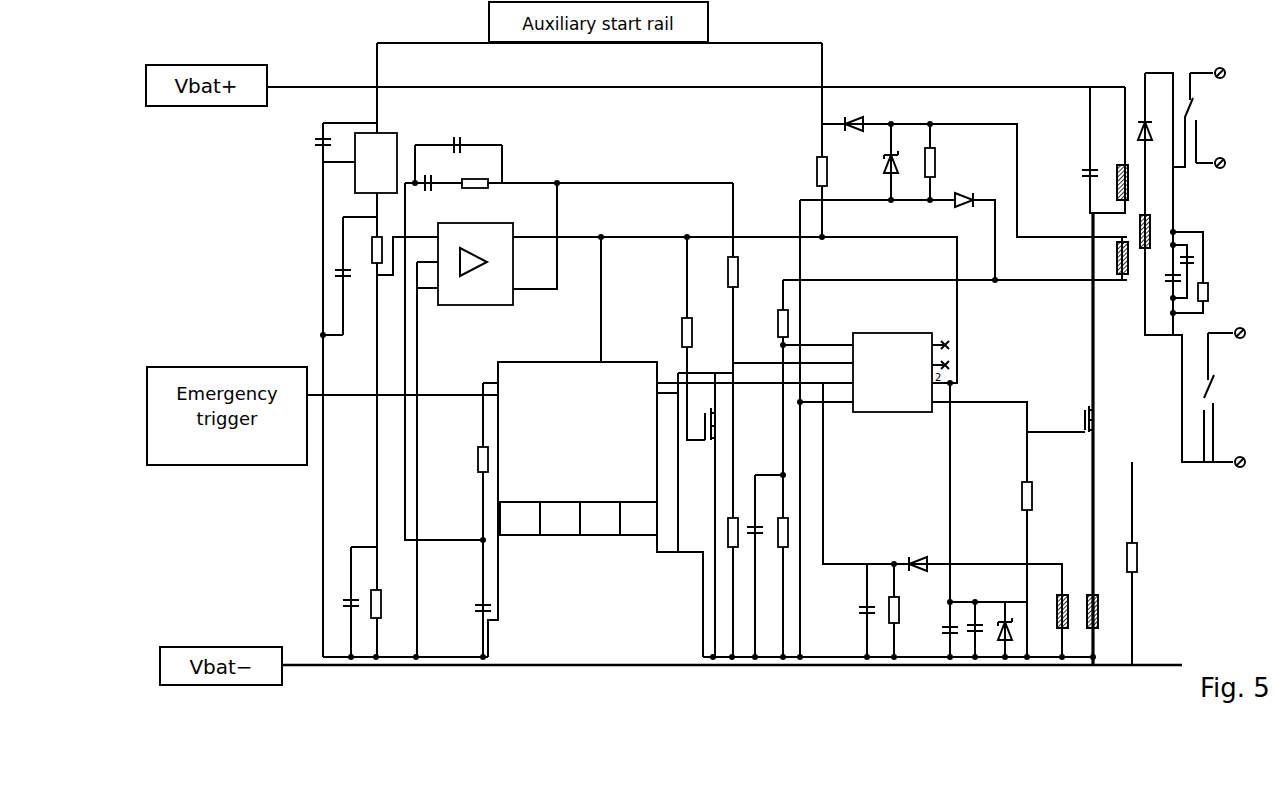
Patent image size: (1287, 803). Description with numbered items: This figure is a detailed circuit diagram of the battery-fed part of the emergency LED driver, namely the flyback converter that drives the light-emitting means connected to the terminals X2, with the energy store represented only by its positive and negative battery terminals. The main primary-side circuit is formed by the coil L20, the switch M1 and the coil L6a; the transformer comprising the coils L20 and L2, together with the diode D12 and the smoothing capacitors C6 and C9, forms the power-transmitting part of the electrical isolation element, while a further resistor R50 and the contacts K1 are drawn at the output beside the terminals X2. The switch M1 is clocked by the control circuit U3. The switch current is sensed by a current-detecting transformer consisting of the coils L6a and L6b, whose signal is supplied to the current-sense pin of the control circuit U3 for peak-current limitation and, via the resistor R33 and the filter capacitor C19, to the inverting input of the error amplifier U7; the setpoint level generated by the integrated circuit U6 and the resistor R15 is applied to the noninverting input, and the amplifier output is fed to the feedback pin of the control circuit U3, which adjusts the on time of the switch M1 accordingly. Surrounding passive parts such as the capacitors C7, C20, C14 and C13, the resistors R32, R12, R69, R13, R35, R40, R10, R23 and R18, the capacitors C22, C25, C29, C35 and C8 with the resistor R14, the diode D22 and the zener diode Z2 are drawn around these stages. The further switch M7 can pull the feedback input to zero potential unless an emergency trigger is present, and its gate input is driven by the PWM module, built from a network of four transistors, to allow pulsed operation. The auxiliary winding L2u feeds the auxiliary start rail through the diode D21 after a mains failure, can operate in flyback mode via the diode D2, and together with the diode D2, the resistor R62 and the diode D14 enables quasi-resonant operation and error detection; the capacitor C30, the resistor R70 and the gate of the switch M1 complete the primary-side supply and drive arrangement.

The PWM module PWM is at (578, 461).
The integrated circuit U6 is at (380, 155).
The capacitor C7 is at (314, 143).
The capacitor C20 is at (349, 285).
The resistor R15 is at (367, 249).
The capacitor C14 is at (429, 173).
The capacitor C13 is at (471, 140).
The resistor R32 is at (474, 174).
The error amplifier U7 is at (470, 263).
The resistor R33 is at (473, 459).
The filter capacitor C19 is at (472, 603).
The capacitor C22 is at (342, 595).
The resistor R23 is at (384, 604).
The resistor R69 is at (678, 333).
The resistor R12 is at (724, 272).
The further switch M7 is at (703, 416).
The resistor R13 is at (739, 548).
The capacitor C25 is at (761, 513).
The resistor R35 is at (776, 548).
The resistor R40 is at (773, 324).
The resistor R10 is at (813, 171).
The diode D21 is at (853, 116).
The diode D14 is at (876, 162).
The resistor R62 is at (939, 163).
The diode D2 is at (964, 210).
The capacitor C30 is at (1076, 167).
The coil L20 is at (1114, 182).
The auxiliary winding L2u is at (1114, 258).
The coil L2 is at (1138, 231).
The diode D12 is at (1157, 123).
The smoothing capacitor C6 is at (1164, 279).
The smoothing capacitor C9 is at (1194, 253).
The resistor R50 is at (1210, 289).
The relay contact K1 is at (1210, 243).
The terminals X2 is at (1228, 265).
The control circuit U3 is at (880, 364).
The switch M1 is at (1101, 419).
The resistor R18 is at (1018, 497).
The diode D22 is at (916, 556).
The capacitor C29 is at (853, 609).
The resistor R14 is at (908, 610).
The capacitor C35 is at (935, 635).
The capacitor C8 is at (970, 618).
The zener diode Z2 is at (1011, 621).
The coil L6b is at (1054, 611).
The coil L6a is at (1103, 611).
The resistor R70 is at (1123, 557).